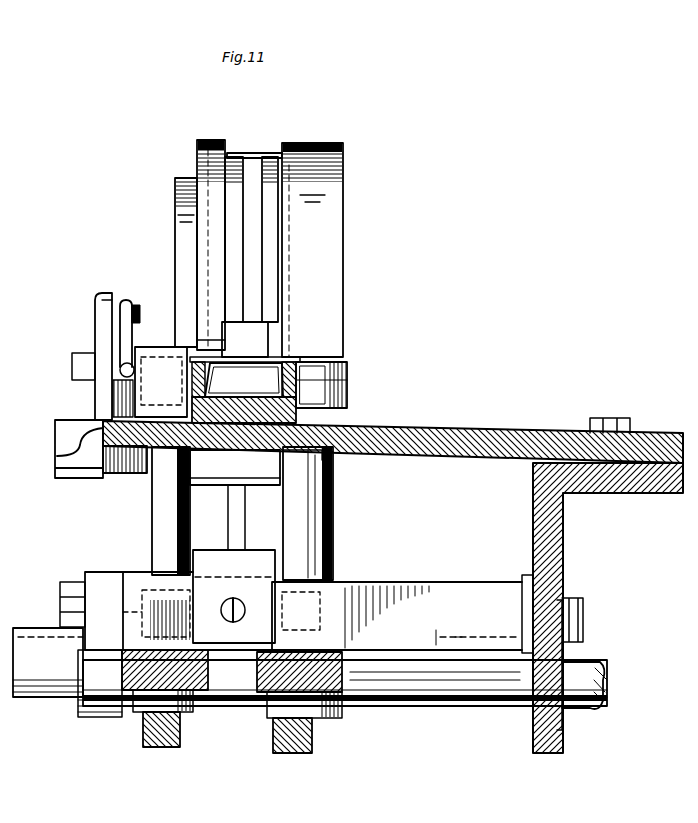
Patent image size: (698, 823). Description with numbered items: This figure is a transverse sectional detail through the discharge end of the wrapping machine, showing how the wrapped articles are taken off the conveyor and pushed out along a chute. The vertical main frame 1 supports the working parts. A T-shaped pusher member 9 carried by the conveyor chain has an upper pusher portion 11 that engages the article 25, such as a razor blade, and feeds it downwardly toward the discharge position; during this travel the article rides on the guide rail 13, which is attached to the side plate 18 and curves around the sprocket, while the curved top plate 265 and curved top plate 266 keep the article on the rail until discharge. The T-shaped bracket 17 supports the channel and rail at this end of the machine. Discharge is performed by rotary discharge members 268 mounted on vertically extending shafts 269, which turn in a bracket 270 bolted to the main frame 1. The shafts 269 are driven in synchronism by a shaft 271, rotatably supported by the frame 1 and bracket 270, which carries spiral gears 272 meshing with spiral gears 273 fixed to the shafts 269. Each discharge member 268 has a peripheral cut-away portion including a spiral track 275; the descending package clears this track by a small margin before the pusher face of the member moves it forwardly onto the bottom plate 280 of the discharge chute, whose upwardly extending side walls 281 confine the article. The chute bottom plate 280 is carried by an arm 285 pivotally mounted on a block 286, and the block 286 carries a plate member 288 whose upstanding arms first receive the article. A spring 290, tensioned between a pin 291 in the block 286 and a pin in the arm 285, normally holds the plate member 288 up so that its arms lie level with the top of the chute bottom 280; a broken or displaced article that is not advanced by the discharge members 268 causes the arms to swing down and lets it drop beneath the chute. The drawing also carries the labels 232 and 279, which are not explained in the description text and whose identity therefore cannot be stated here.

The main frame 1 is at (553, 541).
The pusher member 9 is at (235, 160).
The pusher portion 11 is at (258, 333).
The guide rail 13 is at (237, 157).
The T-shaped bracket 17 is at (270, 157).
The side plate 18 is at (178, 262).
The article 25 is at (285, 362).
The plate 232 is at (522, 434).
The curved top plate 265 is at (205, 218).
The curved top plate 266 is at (336, 244).
The rotary discharge member 268 is at (150, 360).
The shaft 269 is at (158, 525).
The bracket 270 is at (458, 590).
The shaft 271 is at (436, 695).
The spiral gear 272 is at (142, 735).
The spiral gear 273 is at (88, 660).
The spiral track 275 is at (348, 372).
The base 279 is at (297, 405).
The bottom plate 280 is at (240, 397).
The side wall 281 is at (365, 407).
The arm 285 is at (97, 327).
The block 286 is at (100, 403).
The plate member 288 is at (140, 458).
The spring 290 is at (148, 308).
The pin 291 is at (134, 328).